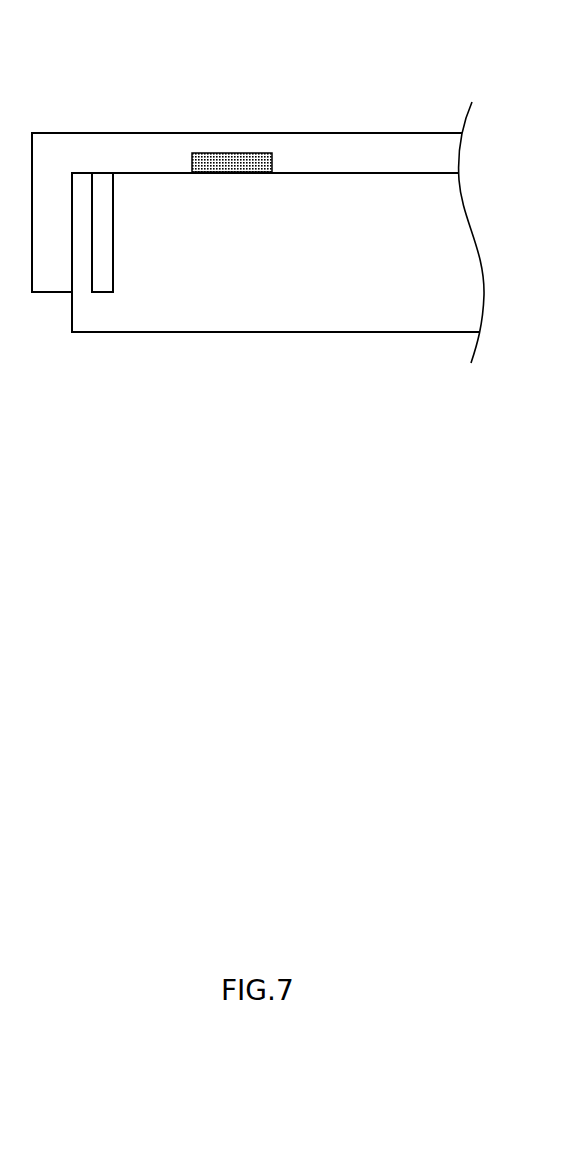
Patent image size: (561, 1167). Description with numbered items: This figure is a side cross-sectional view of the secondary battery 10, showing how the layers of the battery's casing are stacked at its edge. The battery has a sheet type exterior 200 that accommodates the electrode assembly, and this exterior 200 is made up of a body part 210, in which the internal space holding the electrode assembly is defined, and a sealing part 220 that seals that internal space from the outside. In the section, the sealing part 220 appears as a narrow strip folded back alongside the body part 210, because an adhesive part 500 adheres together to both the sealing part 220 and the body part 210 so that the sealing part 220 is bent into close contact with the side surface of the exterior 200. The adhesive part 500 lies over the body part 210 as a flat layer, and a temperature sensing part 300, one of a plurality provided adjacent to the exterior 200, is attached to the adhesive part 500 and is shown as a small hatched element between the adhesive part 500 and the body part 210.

The secondary battery 10 is at (258, 221).
The sheet type exterior 200 is at (276, 301).
The body part 210 is at (182, 312).
The sealing part 220 is at (82, 272).
The temperature sensing part 300 is at (232, 152).
The adhesive part 500 is at (352, 152).